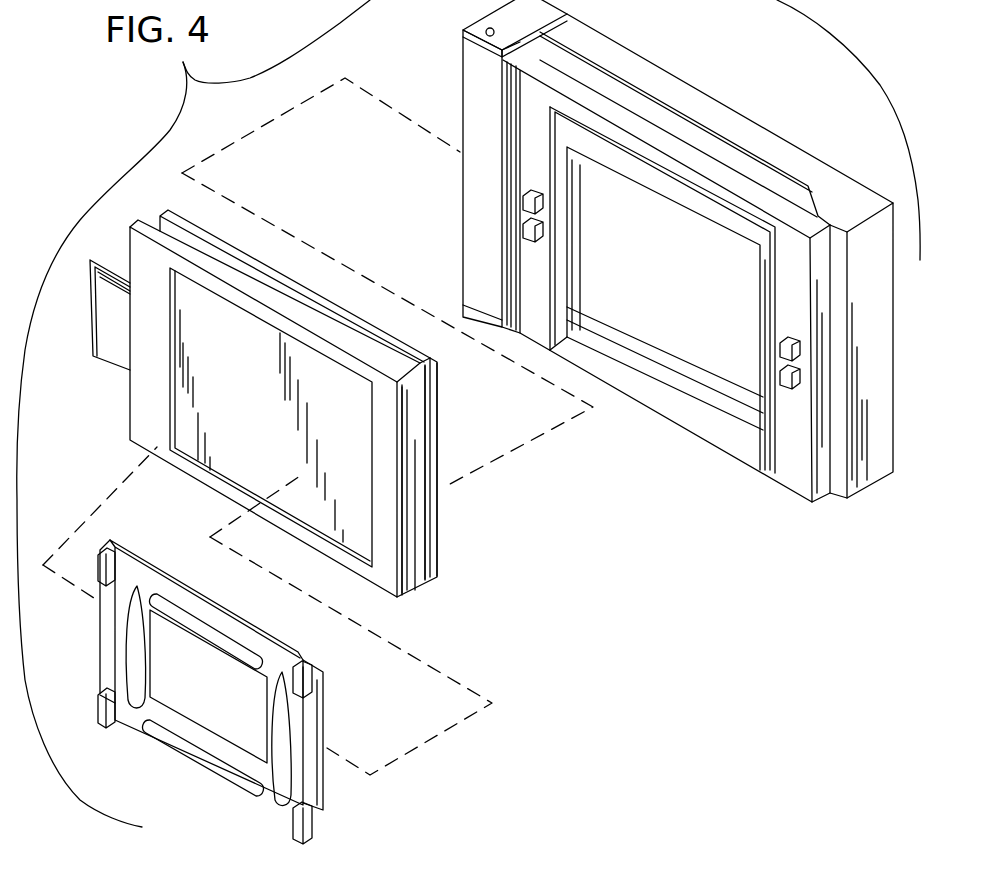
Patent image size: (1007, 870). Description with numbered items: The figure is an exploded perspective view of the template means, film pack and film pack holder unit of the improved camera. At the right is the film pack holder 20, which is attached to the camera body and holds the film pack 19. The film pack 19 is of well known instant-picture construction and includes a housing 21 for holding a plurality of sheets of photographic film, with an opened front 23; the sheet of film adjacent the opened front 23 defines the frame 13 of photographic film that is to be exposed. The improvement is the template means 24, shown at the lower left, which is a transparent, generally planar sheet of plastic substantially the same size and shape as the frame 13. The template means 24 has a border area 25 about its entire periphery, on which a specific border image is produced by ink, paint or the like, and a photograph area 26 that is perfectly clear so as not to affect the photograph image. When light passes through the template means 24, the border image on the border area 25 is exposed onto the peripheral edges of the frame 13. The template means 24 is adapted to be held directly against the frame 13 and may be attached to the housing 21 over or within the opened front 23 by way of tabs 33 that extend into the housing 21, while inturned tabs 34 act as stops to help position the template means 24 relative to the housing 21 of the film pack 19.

The frame of photographic film 13 is at (207, 333).
The film pack 19 is at (417, 512).
The film pack holder 20 is at (847, 497).
The housing 21 is at (415, 545).
The opened front 23 is at (372, 512).
The template means 24 is at (193, 760).
The border area 25 is at (247, 777).
The photograph area 26 is at (153, 737).
The tabs 33 is at (110, 639).
The inturned tabs 34 is at (97, 565).